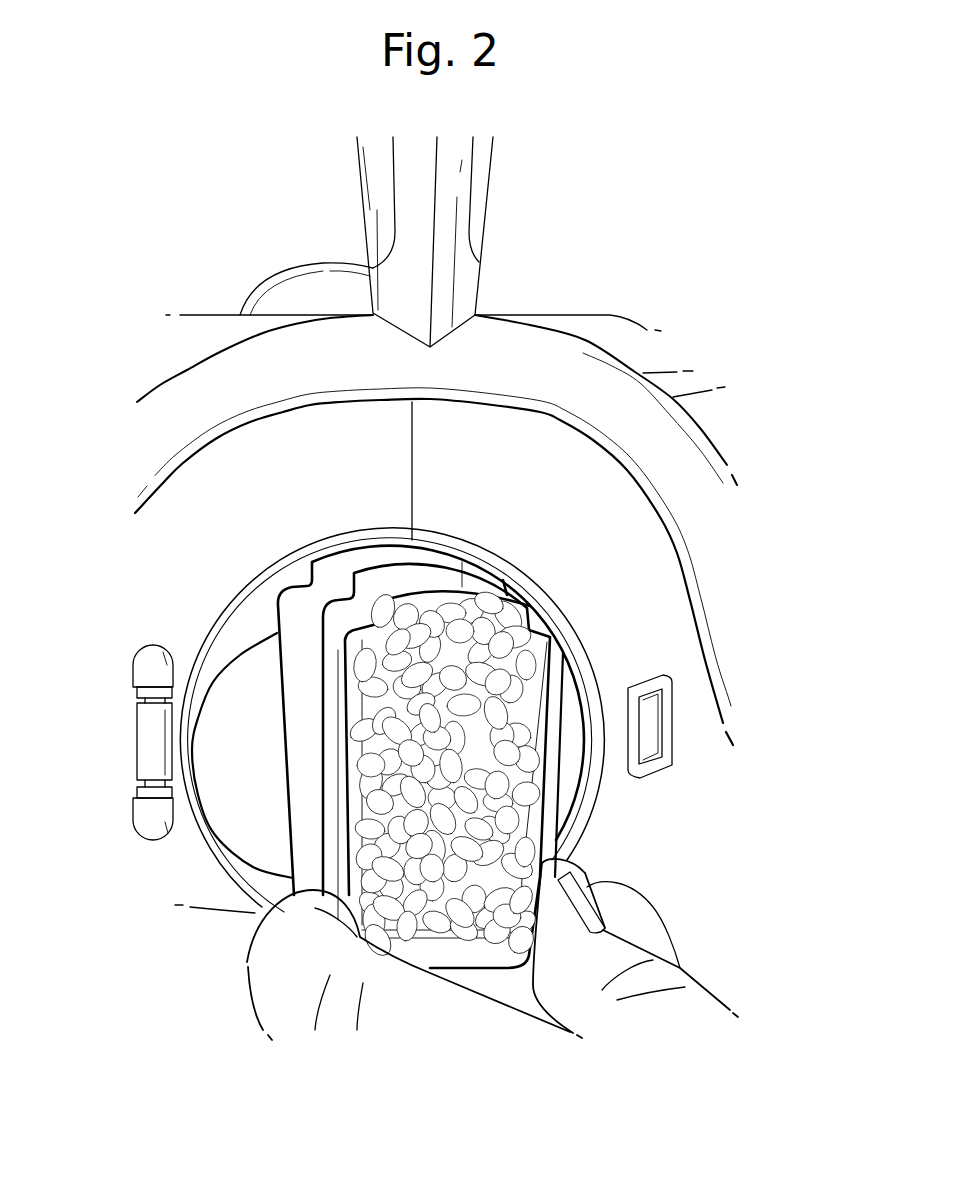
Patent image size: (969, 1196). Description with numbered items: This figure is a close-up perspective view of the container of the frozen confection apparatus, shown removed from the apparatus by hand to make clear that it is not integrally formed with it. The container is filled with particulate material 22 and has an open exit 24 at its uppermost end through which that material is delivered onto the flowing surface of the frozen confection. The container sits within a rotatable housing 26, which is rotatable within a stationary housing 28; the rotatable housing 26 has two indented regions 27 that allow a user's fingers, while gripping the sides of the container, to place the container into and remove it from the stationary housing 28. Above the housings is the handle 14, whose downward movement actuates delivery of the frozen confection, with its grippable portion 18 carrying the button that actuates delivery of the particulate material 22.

The handle 14 is at (657, 431).
The grippable portion 18 is at (467, 270).
The particulate material 22 is at (515, 805).
The open exit 24 is at (441, 572).
The rotatable housing 26 is at (247, 620).
The indented regions 27 is at (232, 822).
The stationary housing 28 is at (288, 486).